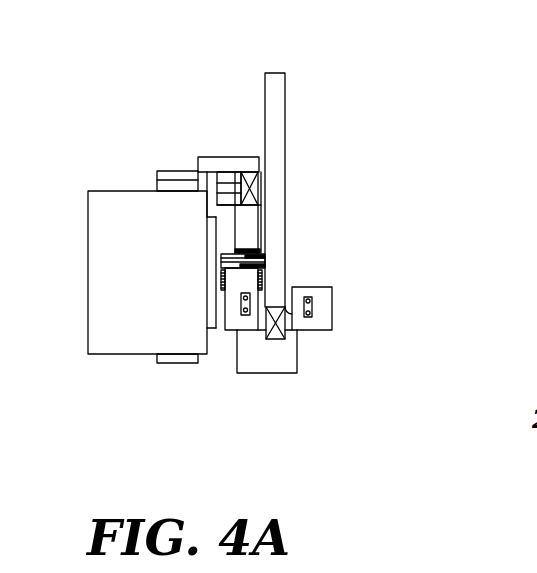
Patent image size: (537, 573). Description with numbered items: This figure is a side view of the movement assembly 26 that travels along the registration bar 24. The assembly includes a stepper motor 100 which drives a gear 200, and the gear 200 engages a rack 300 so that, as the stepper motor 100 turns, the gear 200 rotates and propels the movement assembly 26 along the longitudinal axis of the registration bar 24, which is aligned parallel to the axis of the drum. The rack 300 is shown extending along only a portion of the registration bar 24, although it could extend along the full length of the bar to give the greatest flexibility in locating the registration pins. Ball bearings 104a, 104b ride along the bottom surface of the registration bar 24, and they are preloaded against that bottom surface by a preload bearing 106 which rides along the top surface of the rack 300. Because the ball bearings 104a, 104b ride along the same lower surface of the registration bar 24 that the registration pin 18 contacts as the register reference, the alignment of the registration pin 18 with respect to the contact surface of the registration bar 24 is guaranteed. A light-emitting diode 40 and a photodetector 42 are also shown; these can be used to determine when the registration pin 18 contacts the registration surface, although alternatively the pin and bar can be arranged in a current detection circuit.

The stepper motor 100 is at (112, 265).
The movement assembly 26 is at (234, 163).
The preload bearing 106 is at (255, 190).
The registration bar 24 is at (275, 146).
The rack 300 is at (250, 249).
The gear 200 is at (265, 263).
The photodetector 42 is at (244, 304).
The ball bearing 104a is at (276, 340).
The ball bearing 104b is at (275, 323).
The light-emitting diode 40 is at (313, 306).
The registration pin 18 is at (283, 365).